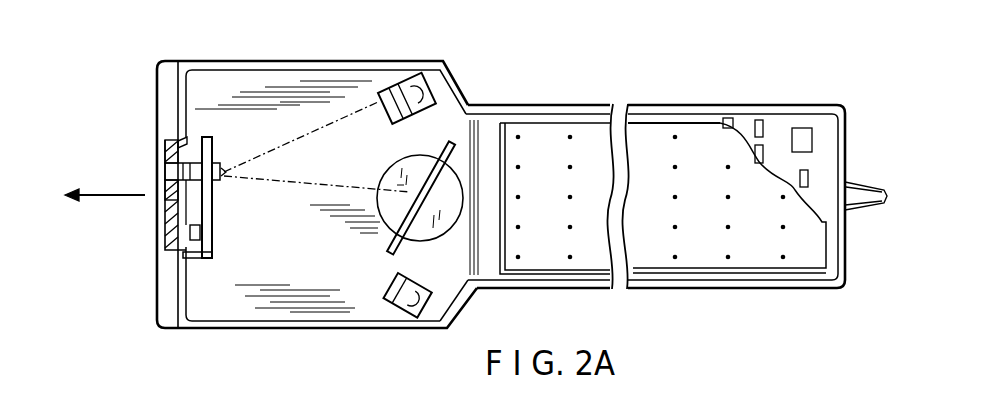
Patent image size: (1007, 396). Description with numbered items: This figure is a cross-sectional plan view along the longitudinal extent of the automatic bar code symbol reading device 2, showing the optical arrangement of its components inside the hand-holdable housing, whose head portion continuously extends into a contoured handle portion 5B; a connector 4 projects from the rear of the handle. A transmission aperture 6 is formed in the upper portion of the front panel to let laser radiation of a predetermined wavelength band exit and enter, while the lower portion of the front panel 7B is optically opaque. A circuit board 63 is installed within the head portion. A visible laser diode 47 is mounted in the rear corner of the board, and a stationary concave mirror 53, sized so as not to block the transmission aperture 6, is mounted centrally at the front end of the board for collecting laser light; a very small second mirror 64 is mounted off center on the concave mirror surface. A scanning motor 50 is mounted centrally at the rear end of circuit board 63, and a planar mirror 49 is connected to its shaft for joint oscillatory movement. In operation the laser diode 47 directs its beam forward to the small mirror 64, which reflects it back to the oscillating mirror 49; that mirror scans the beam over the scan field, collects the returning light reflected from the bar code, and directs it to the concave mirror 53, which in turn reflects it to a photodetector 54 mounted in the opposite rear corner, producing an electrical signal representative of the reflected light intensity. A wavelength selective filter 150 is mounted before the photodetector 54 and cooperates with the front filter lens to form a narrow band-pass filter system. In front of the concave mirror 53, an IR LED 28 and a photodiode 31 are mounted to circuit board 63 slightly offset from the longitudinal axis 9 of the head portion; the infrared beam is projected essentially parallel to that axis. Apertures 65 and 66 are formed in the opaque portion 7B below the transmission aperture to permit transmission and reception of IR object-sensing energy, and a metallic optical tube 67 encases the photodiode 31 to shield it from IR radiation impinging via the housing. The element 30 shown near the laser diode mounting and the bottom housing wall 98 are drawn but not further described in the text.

The automatic bar code symbol reading device 2 is at (725, 92).
The connector 4 is at (860, 208).
The contoured handle portion 5B is at (780, 105).
The transmission aperture 6 is at (152, 132).
The lower portion of front panel 7B is at (178, 88).
The longitudinal axis 9 is at (93, 197).
The IR LED 28 is at (188, 238).
The bracket bevel 30 is at (173, 165).
The photodiode 31 is at (181, 144).
The visible laser diode 47 is at (425, 72).
The planar mirror 49 is at (462, 108).
The scanning motor 50 is at (392, 232).
The stationary concave mirror 53 is at (185, 258).
The photodetector 54 is at (400, 320).
The circuit board 63 is at (345, 78).
The second mirror 64 is at (214, 158).
The aperture 65 is at (167, 237).
The aperture 66 is at (185, 172).
The metallic optical tube 67 is at (185, 186).
The housing bottom wall 98 is at (283, 332).
The wavelength selective filter 150 is at (380, 292).